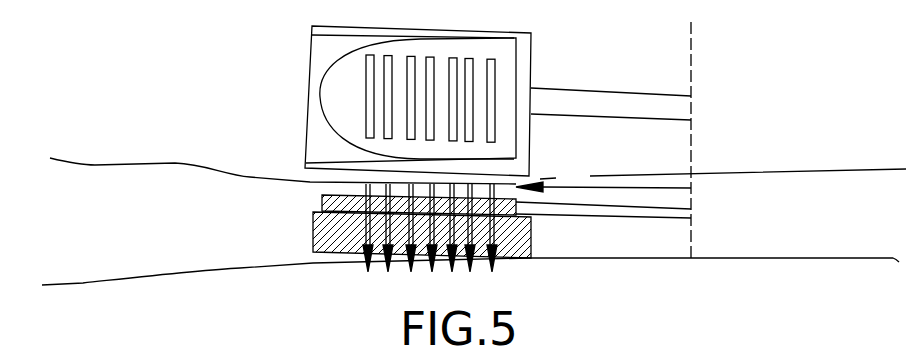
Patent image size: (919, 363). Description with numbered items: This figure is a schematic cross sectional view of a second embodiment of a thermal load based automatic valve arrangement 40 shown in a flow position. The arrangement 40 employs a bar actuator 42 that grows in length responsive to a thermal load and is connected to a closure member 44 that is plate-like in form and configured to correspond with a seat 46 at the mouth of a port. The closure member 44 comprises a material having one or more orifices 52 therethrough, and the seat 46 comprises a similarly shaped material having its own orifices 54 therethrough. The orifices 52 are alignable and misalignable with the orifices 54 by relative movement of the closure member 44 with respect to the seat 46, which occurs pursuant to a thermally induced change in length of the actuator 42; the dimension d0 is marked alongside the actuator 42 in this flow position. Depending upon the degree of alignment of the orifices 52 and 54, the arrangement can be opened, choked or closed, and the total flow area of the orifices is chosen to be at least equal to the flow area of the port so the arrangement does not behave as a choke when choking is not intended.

The thermal load based automatic valve arrangement 40 is at (752, 239).
The bar actuator 42 is at (603, 212).
The closure member 44 is at (333, 198).
The seat 46 is at (333, 229).
The orifices 52 is at (373, 201).
The orifices 54 is at (367, 243).
The distance d0 is at (603, 173).